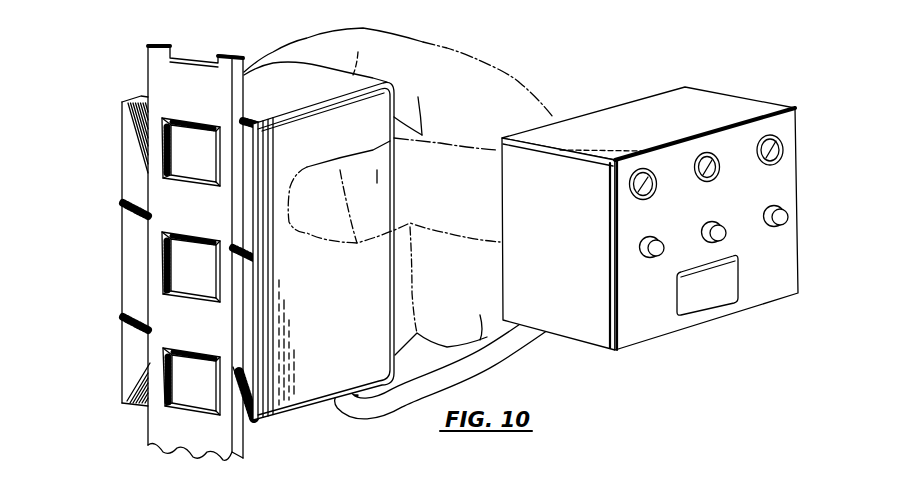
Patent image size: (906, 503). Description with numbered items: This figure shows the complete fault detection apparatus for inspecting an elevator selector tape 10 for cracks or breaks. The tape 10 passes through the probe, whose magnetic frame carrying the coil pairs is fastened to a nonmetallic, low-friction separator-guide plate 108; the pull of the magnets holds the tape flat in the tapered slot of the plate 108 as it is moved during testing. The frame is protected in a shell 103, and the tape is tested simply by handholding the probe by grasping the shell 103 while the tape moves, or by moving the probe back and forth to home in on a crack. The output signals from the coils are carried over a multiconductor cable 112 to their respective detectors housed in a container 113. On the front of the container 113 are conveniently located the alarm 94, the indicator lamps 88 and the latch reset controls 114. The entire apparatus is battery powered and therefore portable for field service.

The elevator selector tape 10 is at (190, 442).
The separator-guide plate 108 is at (119, 257).
The shell 103 is at (305, 389).
The multiconductor cable 112 is at (396, 409).
The container 113 is at (730, 108).
The indicator lamps 88 is at (653, 195).
The latch reset controls 114 is at (658, 242).
The alarm 94 is at (703, 300).